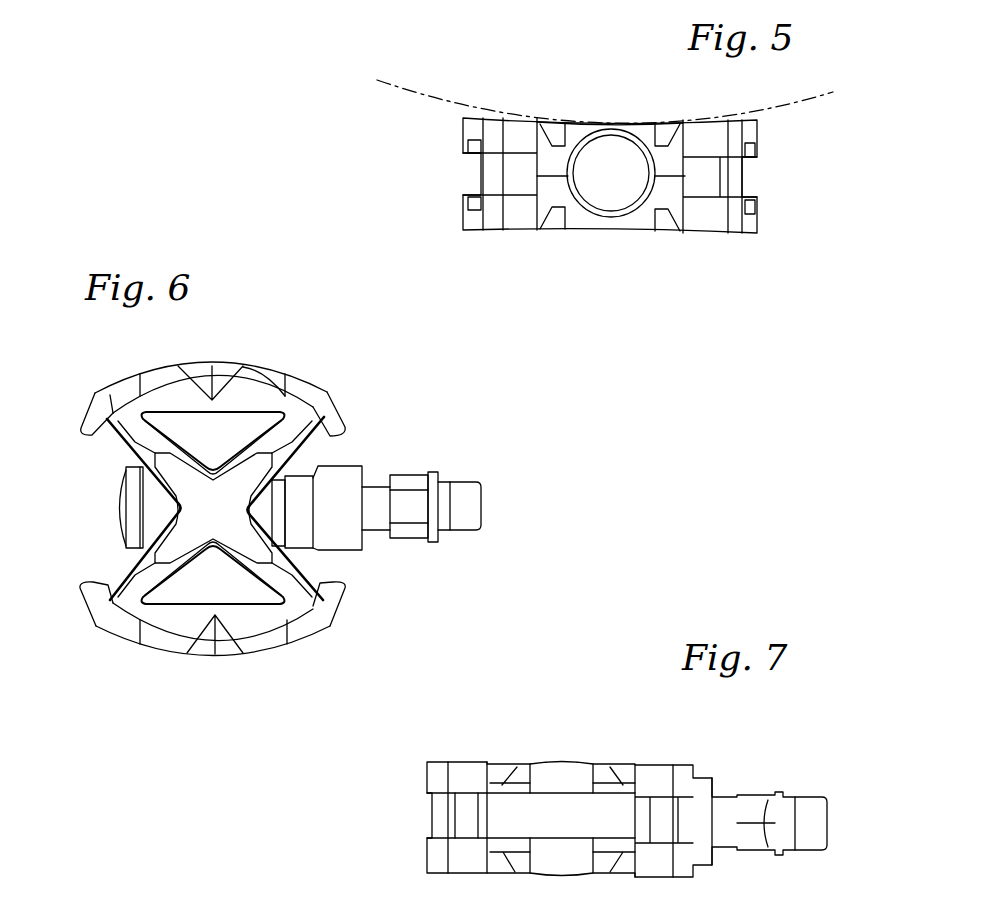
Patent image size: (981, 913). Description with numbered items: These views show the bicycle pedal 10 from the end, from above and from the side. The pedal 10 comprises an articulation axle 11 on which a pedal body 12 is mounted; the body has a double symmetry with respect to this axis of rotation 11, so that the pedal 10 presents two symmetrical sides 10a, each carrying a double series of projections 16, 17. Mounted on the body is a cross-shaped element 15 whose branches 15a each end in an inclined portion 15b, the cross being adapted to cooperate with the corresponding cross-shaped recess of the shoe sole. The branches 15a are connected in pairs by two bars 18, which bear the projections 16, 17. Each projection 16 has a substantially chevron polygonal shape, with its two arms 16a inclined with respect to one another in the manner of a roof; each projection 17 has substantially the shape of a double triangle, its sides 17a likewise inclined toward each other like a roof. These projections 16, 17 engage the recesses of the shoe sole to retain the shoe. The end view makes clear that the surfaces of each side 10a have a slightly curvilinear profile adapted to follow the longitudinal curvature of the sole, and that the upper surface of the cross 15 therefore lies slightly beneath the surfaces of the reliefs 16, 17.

In FIG. 5, the bicycle pedal 10 is at (425, 184).
In FIG. 6, the bicycle pedal 10 is at (90, 662).
In FIG. 7, the bicycle pedal 10 is at (398, 872).
In FIG. 5, the symmetrical side 10a is at (608, 108).
In FIG. 5, the articulation axle 11 is at (620, 185).
In FIG. 6, the articulation axle 11 is at (460, 488).
In FIG. 7, the articulation axle 11 is at (726, 802).
In FIG. 5, the pedal body 12 is at (565, 202).
In FIG. 7, the pedal body 12 is at (430, 818).
In FIG. 5, the cross-shaped element 15 is at (647, 122).
In FIG. 6, the cross-shaped element 15 is at (317, 455).
In FIG. 6, the branch 15a is at (274, 560).
In FIG. 6, the inclined portion 15b is at (277, 586).
In FIG. 7, the inclined portion 15b is at (622, 766).
In FIG. 5, the projection 16 is at (490, 118).
In FIG. 6, the projection 16 is at (118, 385).
In FIG. 7, the projection 16 is at (448, 760).
In FIG. 6, the arm 16a is at (121, 381).
In FIG. 7, the arm 16a is at (467, 760).
In FIG. 6, the projection 17 is at (212, 362).
In FIG. 7, the projection 17 is at (566, 760).
In FIG. 6, the side 17a is at (230, 360).
In FIG. 7, the side 17a is at (615, 768).
In FIG. 6, the bar 18 is at (264, 378).